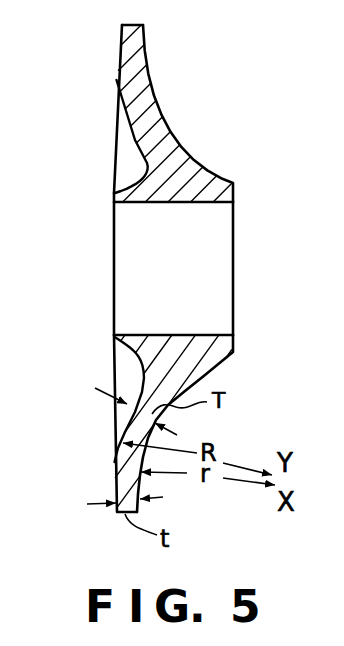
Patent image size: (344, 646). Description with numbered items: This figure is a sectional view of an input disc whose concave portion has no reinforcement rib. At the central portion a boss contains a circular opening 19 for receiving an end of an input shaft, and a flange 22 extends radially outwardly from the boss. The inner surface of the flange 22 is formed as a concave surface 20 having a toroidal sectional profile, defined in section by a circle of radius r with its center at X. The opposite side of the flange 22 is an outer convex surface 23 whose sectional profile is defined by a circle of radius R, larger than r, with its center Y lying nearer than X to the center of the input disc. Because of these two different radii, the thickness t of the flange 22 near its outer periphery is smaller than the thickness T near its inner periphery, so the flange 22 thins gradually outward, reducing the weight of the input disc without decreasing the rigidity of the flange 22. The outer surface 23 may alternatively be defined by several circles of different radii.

The circular opening 19 is at (200, 204).
The inner concave surface 20 is at (150, 445).
The flange 22 is at (120, 83).
The outer convex surface 23 is at (113, 453).